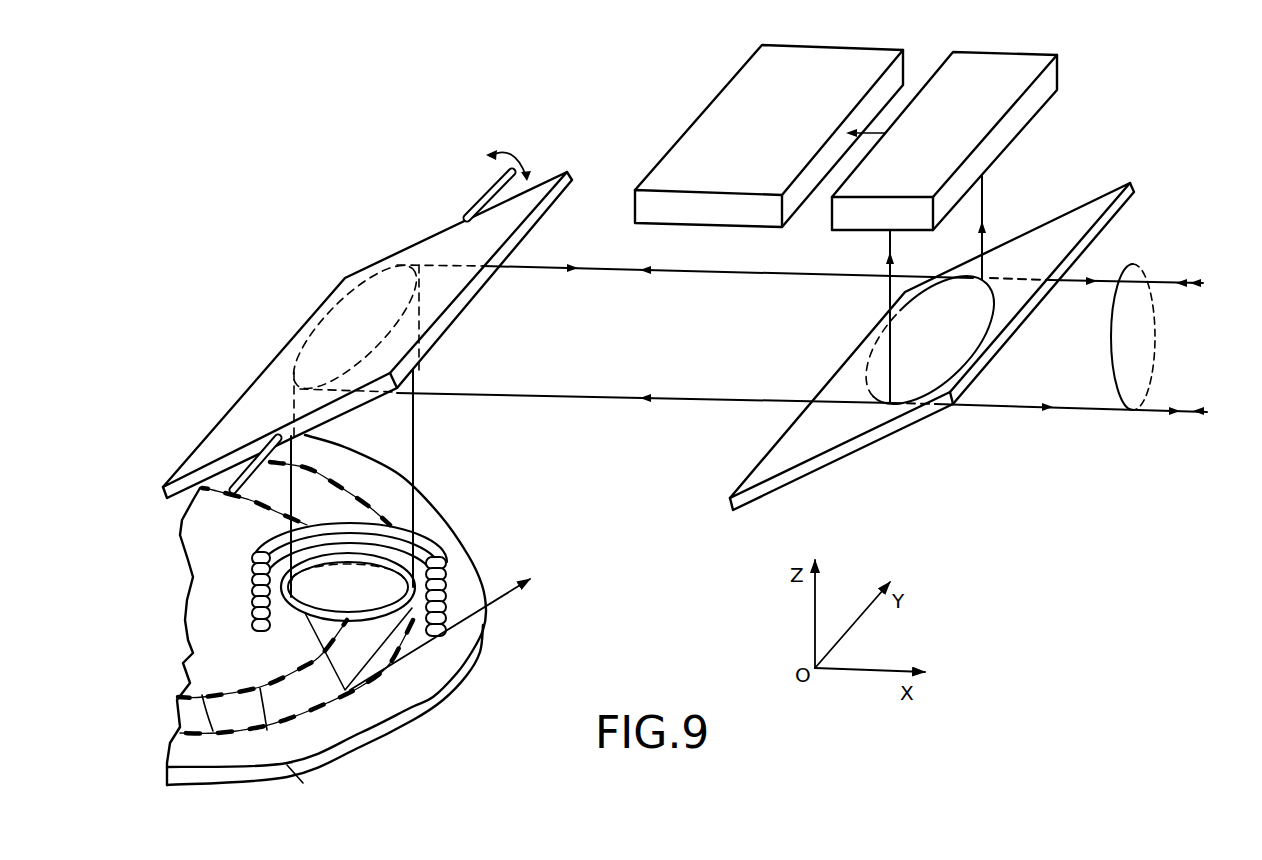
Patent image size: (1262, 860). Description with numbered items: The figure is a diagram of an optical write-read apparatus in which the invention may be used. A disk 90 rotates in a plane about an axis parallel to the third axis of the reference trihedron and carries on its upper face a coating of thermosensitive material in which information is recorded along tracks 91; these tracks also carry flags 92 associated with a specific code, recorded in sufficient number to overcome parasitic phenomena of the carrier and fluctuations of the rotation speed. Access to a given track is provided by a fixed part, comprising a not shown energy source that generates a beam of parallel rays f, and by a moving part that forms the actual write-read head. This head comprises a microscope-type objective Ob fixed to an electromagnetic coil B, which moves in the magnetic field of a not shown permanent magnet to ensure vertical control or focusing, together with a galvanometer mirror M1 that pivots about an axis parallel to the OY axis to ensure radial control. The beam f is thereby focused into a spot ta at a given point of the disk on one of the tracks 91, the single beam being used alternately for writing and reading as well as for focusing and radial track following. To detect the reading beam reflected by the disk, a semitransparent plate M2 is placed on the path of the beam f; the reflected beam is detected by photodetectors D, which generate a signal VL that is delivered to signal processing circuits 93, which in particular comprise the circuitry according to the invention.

The disk 90 is at (468, 675).
The tracks 91 is at (287, 764).
The flags 92 is at (265, 724).
The signal processing circuits 93 is at (718, 96).
The galvanometer mirror M1 is at (295, 336).
The semitransparent plate M2 is at (1088, 203).
The photodetectors D is at (1027, 112).
The electromagnetic coil B is at (430, 547).
The microscope-type objective Ob is at (440, 575).
The beam of parallel rays f is at (1141, 273).
The signal VL is at (870, 135).
The spot ta is at (350, 691).